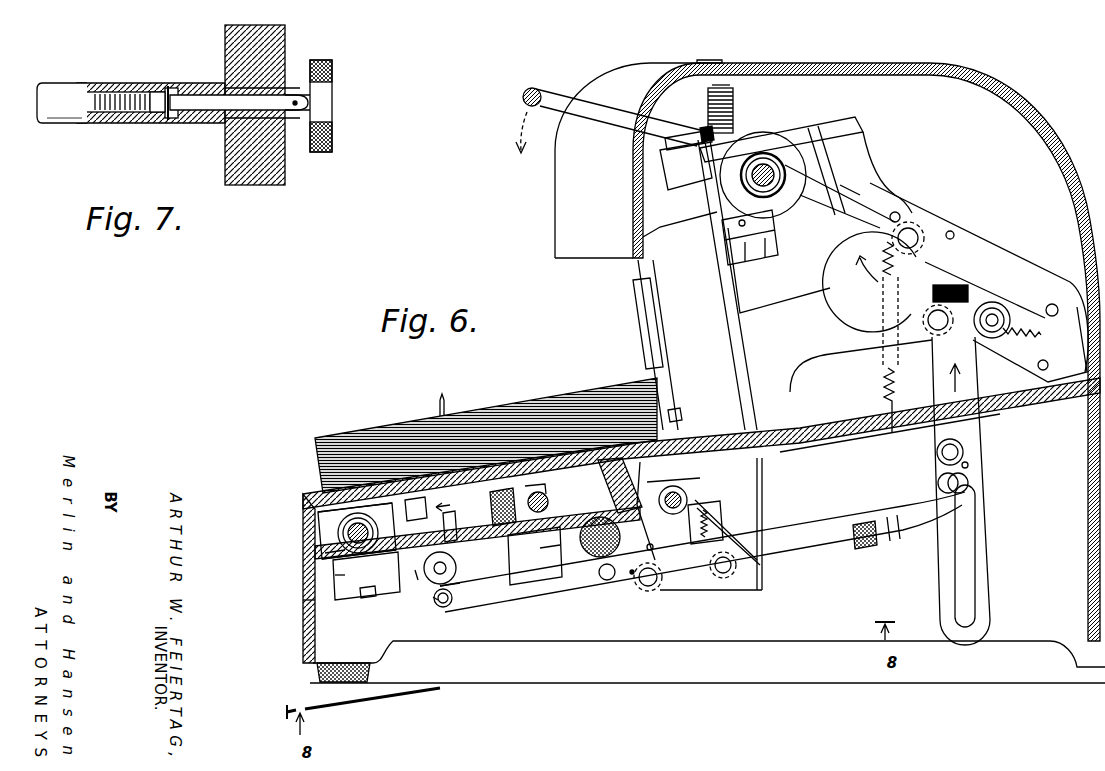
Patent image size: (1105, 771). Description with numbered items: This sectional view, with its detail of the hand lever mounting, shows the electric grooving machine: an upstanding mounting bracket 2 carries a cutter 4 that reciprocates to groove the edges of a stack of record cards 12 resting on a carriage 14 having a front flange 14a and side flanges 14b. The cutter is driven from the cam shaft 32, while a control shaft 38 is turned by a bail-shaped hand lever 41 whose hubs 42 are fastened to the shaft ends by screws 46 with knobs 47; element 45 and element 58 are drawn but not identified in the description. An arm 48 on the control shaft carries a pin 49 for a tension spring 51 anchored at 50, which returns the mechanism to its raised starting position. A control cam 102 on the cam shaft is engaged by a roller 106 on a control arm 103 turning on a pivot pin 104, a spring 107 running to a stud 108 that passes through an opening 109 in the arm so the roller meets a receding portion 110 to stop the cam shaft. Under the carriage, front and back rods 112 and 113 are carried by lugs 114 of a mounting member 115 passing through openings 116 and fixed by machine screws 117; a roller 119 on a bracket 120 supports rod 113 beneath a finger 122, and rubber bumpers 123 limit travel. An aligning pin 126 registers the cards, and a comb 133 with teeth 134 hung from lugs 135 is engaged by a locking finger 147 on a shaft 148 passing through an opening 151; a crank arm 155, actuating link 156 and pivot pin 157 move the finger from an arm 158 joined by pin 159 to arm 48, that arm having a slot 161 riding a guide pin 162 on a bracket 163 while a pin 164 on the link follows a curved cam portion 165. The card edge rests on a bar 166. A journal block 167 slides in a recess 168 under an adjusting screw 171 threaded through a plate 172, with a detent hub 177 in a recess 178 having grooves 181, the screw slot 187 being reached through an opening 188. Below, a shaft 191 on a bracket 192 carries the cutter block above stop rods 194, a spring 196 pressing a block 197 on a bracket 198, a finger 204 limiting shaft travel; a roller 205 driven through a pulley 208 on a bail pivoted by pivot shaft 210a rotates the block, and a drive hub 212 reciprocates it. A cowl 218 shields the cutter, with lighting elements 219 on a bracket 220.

In FIG. 6, the mounting bracket 2 is at (992, 243).
In FIG. 6, the cutter 4 is at (640, 348).
In FIG. 6, the record cards 12 is at (373, 432).
In FIG. 6, the carriage 14 is at (284, 514).
In FIG. 6, the front flange 14a is at (333, 543).
In FIG. 6, the side flanges 14b is at (323, 532).
In FIG. 6, the cam shaft 32 is at (915, 230).
In FIG. 7, the control shaft 38 is at (68, 118).
In FIG. 6, the hand lever 41 is at (556, 100).
In FIG. 7, the hubs 42 is at (257, 178).
In FIG. 6, the hubs 42 is at (803, 195).
In FIG. 7, the plunger 45 is at (183, 120).
In FIG. 7, the screws 46 is at (121, 115).
In FIG. 7, the knobs 47 is at (332, 129).
In FIG. 6, the knobs 47 is at (787, 163).
In FIG. 6, the arm 48 is at (847, 188).
In FIG. 6, the pin 49 is at (896, 212).
In FIG. 6, the spring anchor 50 is at (886, 412).
In FIG. 6, the tension spring 51 is at (885, 243).
In FIG. 6, the shaft 58 is at (763, 165).
In FIG. 6, the control cam 102 is at (869, 282).
In FIG. 6, the control arm 103 is at (998, 352).
In FIG. 6, the pivot pin 104 is at (1067, 290).
In FIG. 6, the cam engaging roller 106 is at (936, 332).
In FIG. 6, the spring 107 is at (1025, 338).
In FIG. 6, the stud 108 is at (1000, 312).
In FIG. 6, the opening 109 is at (997, 290).
In FIG. 6, the receding portion 110 is at (930, 303).
In FIG. 6, the front carriage supporting rod 112 is at (350, 525).
In FIG. 6, the back carriage supporting rod 113 is at (549, 500).
In FIG. 6, the lugs 114 is at (340, 557).
In FIG. 6, the mounting member 115 is at (342, 600).
In FIG. 6, the openings 116 is at (340, 582).
In FIG. 6, the machine screws 117 is at (370, 590).
In FIG. 6, the roller 119 is at (550, 555).
In FIG. 6, the bracket 120 is at (545, 555).
In FIG. 6, the finger 122 is at (540, 487).
In FIG. 6, the rubber bumpers 123 is at (498, 490).
In FIG. 6, the aligning pin 126 is at (448, 402).
In FIG. 6, the aligning comb 133 is at (366, 576).
In FIG. 6, the teeth 134 is at (410, 567).
In FIG. 6, the lugs 135 is at (428, 502).
In FIG. 6, the locking finger 147 is at (456, 518).
In FIG. 6, the shaft 148 is at (447, 568).
In FIG. 6, the opening 151 is at (433, 582).
In FIG. 6, the crank arm 155 is at (433, 597).
In FIG. 6, the actuating link 156 is at (815, 537).
In FIG. 6, the pivot pin 157 is at (447, 605).
In FIG. 6, the arm 158 is at (980, 510).
In FIG. 6, the pivot pin 159 is at (952, 231).
In FIG. 6, the slot 161 is at (968, 548).
In FIG. 6, the guide pin 162 is at (970, 483).
In FIG. 6, the bracket 163 is at (997, 422).
In FIG. 6, the pin 164 is at (940, 454).
In FIG. 6, the curved cam portion 165 is at (968, 465).
In FIG. 6, the bar 166 is at (679, 414).
In FIG. 6, the journal block 167 is at (779, 270).
In FIG. 6, the recess 168 is at (720, 273).
In FIG. 6, the adjusting screw 171 is at (736, 95).
In FIG. 6, the plate 172 is at (823, 125).
In FIG. 6, the detent hub 177 is at (732, 247).
In FIG. 6, the recess 178 is at (774, 225).
In FIG. 6, the grooves 181 is at (766, 257).
In FIG. 6, the slot 187 is at (717, 88).
In FIG. 6, the opening 188 is at (707, 62).
In FIG. 6, the shaft 191 is at (683, 498).
In FIG. 6, the mounting bracket 192 is at (748, 487).
In FIG. 6, the stop rods 194 is at (726, 578).
In FIG. 6, the spring 196 is at (704, 521).
In FIG. 6, the block 197 is at (636, 539).
In FIG. 6, the bracket 198 is at (705, 509).
In FIG. 6, the finger 204 is at (639, 511).
In FIG. 6, the roller 205 is at (660, 482).
In FIG. 6, the pulley 208 is at (598, 568).
In FIG. 6, the pivot shaft 210a is at (630, 585).
In FIG. 6, the drive hub 212 is at (628, 572).
In FIG. 6, the cowl 218 is at (588, 250).
In FIG. 6, the lighting elements 219 is at (648, 203).
In FIG. 6, the bracket 220 is at (712, 145).